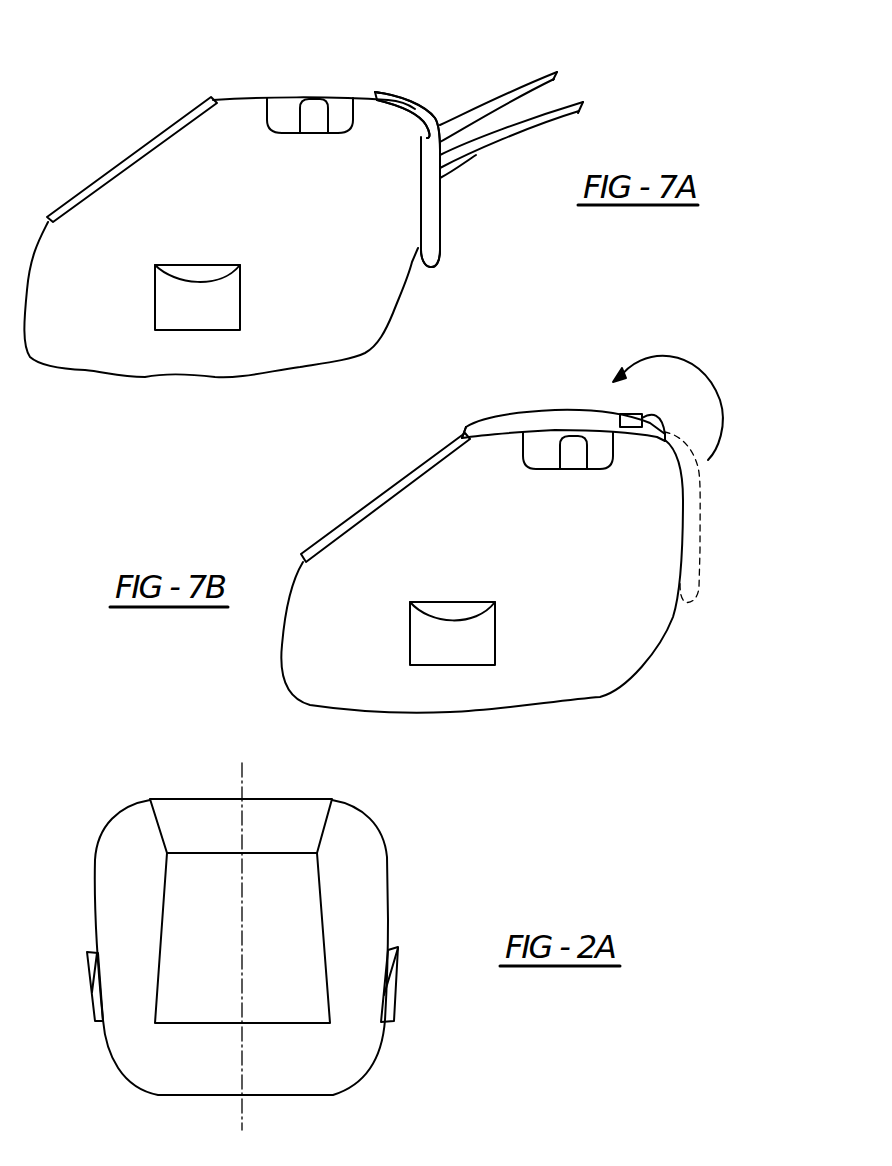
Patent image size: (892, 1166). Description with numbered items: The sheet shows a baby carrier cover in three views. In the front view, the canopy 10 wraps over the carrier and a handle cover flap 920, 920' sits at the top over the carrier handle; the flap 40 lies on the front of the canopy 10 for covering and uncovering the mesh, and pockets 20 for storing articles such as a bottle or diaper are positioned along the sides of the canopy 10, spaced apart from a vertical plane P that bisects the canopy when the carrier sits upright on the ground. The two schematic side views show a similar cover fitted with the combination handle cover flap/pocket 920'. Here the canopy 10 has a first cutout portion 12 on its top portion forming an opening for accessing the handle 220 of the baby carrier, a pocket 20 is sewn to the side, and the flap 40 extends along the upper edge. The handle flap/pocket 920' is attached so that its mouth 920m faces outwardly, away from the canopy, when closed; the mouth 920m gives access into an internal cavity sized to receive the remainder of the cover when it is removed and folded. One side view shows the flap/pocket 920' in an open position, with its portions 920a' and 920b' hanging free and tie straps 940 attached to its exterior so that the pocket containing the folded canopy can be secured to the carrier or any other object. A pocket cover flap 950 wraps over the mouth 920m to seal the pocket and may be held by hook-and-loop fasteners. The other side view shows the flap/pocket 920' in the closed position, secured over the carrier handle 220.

In FIG. 7A, the canopy 10 is at (383, 280).
In FIG. 7B, the canopy 10 is at (603, 633).
In FIG. 2A, the canopy 10 is at (370, 870).
In FIG. 7A, the first cutout portion 12 is at (287, 108).
In FIG. 7B, the first cutout portion 12 is at (600, 450).
In FIG. 7A, the pockets 20 is at (187, 313).
In FIG. 7B, the pockets 20 is at (487, 650).
In FIG. 2A, the pockets 20 is at (93, 1012).
In FIG. 7A, the flap 40 is at (110, 168).
In FIG. 7B, the flap 40 is at (396, 487).
In FIG. 2A, the flap 40 is at (300, 960).
In FIG. 7A, the handle 220 is at (313, 107).
In FIG. 7B, the handle 220 is at (574, 445).
In FIG. 2A, the handle cover flap 920 is at (294, 793).
In FIG. 7A, the handle cover flap/pocket 920' is at (474, 179).
In FIG. 7B, the handle cover flap/pocket 920' is at (563, 396).
In FIG. 7A, the first lip portion 920a' is at (411, 84).
In FIG. 7B, the first lip portion 920a' is at (703, 393).
In FIG. 7A, the second lip portion 920b' is at (487, 276).
In FIG. 7B, the second lip portion 920b' is at (432, 408).
In FIG. 7A, the mouth 920m is at (441, 120).
In FIG. 7B, the mouth 920m is at (634, 426).
In FIG. 7A, the tie straps 940 is at (553, 80).
In FIG. 7A, the pocket cover flap 950 is at (424, 103).
In FIG. 7B, the pocket cover flap 950 is at (645, 418).
In FIG. 2A, the vertical plane P is at (243, 1112).